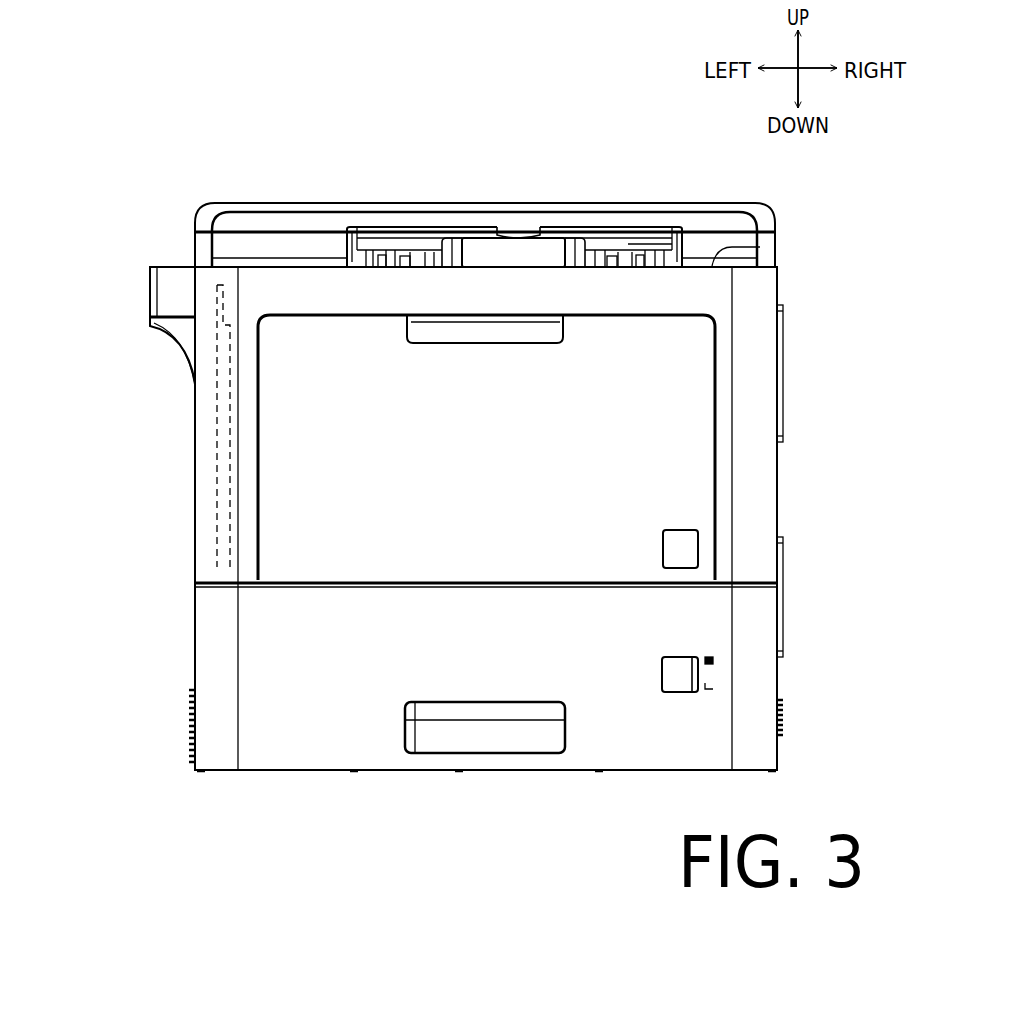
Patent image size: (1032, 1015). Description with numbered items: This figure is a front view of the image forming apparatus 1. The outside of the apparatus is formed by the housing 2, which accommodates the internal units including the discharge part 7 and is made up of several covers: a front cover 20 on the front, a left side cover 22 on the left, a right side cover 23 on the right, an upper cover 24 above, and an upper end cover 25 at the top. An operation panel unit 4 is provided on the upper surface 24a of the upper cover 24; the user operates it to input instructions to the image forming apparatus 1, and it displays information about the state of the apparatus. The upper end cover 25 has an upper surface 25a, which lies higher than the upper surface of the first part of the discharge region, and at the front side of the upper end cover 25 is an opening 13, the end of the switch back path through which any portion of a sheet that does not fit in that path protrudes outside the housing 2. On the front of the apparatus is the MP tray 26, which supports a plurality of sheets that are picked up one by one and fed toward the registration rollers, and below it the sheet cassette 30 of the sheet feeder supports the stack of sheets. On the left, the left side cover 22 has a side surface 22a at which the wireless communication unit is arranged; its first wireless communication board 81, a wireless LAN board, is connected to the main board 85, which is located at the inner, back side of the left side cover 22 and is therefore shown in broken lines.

The image forming apparatus 1 is at (510, 118).
The housing 2 is at (587, 190).
The operation panel unit 4 is at (182, 262).
The discharge part 7 is at (350, 223).
The opening 13 is at (519, 228).
The front cover 20 is at (755, 355).
The left side cover 22 is at (190, 472).
The side surface 22a is at (194, 400).
The right side cover 23 is at (782, 477).
The upper cover 24 is at (146, 292).
The upper surface 24a is at (760, 248).
The upper end cover 25 is at (465, 198).
The upper surface 25a is at (657, 203).
The MP tray 26 is at (295, 510).
The sheet cassette 30 is at (605, 743).
The first wireless communication board 81 is at (217, 316).
The main board 85 is at (217, 422).